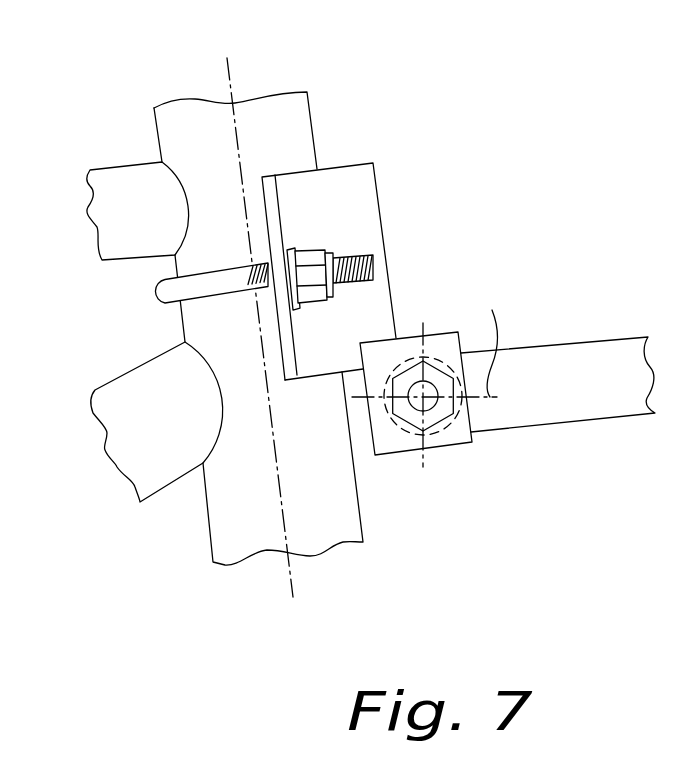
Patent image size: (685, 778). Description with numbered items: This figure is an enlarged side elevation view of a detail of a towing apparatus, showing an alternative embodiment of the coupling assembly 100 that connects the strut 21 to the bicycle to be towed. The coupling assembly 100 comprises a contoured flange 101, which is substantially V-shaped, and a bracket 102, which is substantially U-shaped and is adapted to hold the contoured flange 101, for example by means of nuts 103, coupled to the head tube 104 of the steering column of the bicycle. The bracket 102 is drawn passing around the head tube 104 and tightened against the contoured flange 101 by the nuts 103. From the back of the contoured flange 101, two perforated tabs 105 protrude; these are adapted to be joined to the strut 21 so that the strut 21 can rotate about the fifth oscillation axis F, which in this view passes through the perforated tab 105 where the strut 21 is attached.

The coupling assembly 100 is at (282, 292).
The contoured flange 101 is at (345, 182).
The bracket 102 is at (157, 300).
The nuts 103 is at (307, 255).
The head tube 104 is at (190, 120).
The perforated tabs 105 is at (448, 438).
The strut 21 is at (585, 331).
The fifth oscillation axis F is at (496, 336).